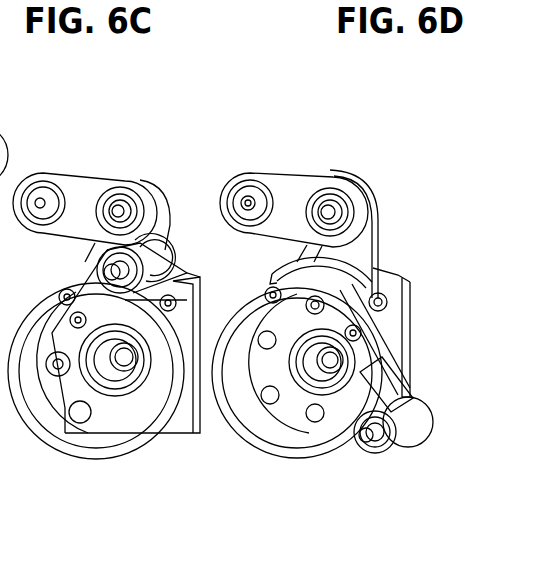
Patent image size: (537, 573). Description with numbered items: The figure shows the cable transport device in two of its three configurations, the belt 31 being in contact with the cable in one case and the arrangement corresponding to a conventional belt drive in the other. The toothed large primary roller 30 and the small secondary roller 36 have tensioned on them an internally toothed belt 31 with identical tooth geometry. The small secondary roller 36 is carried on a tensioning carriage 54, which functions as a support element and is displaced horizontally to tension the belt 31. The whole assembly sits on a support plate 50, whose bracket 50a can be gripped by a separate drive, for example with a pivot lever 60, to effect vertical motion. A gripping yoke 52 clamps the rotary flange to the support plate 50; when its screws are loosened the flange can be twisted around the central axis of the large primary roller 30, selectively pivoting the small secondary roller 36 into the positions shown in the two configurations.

In FIG. 6C, the large primary roller 30 is at (78, 430).
In FIG. 6D, the large primary roller 30 is at (262, 418).
In FIG. 6D, the belt 31 is at (333, 453).
In FIG. 6C, the small secondary roller 36 is at (158, 255).
In FIG. 6D, the small secondary roller 36 is at (412, 445).
In FIG. 6C, the support plate 50 is at (126, 306).
In FIG. 6D, the support plate 50 is at (408, 317).
In FIG. 6D, the bracket 50a is at (367, 196).
In FIG. 6D, the gripping yoke 52 is at (352, 272).
In FIG. 6D, the tensioning carriage 54 is at (385, 375).
In FIG. 6C, the pivot lever 60 is at (85, 190).
In FIG. 6D, the pivot lever 60 is at (297, 192).